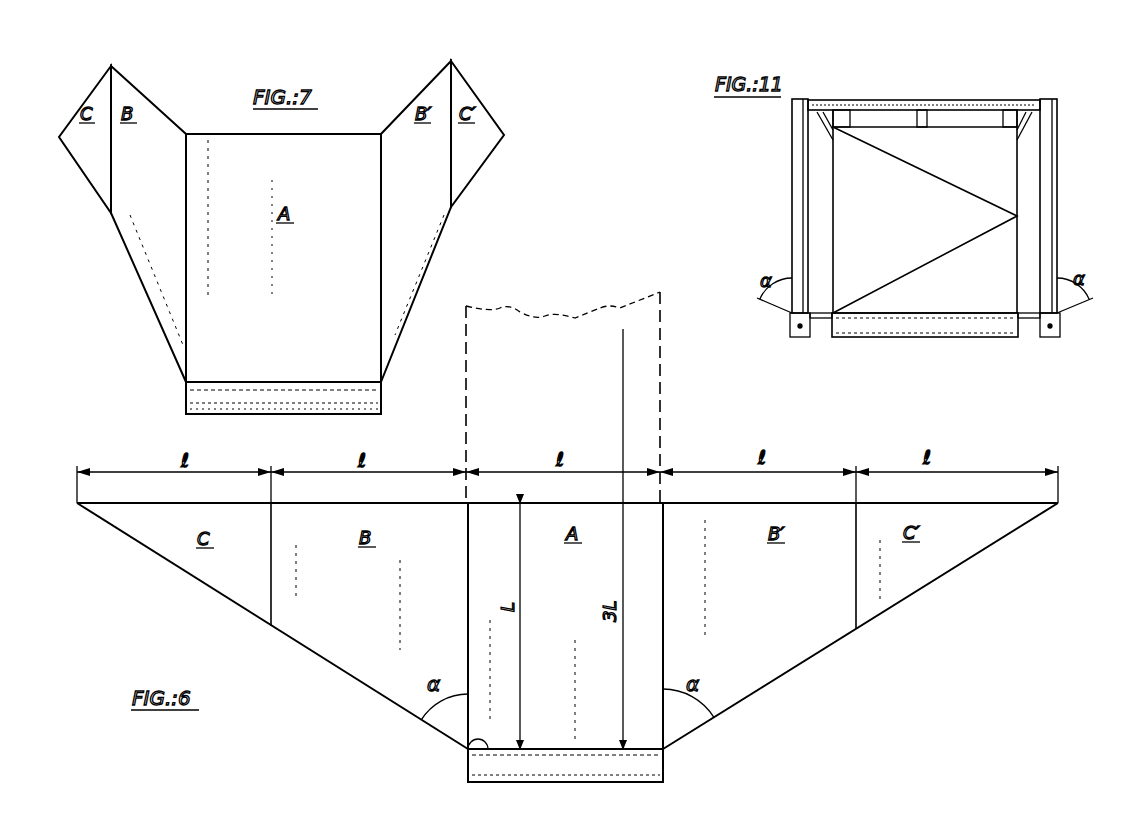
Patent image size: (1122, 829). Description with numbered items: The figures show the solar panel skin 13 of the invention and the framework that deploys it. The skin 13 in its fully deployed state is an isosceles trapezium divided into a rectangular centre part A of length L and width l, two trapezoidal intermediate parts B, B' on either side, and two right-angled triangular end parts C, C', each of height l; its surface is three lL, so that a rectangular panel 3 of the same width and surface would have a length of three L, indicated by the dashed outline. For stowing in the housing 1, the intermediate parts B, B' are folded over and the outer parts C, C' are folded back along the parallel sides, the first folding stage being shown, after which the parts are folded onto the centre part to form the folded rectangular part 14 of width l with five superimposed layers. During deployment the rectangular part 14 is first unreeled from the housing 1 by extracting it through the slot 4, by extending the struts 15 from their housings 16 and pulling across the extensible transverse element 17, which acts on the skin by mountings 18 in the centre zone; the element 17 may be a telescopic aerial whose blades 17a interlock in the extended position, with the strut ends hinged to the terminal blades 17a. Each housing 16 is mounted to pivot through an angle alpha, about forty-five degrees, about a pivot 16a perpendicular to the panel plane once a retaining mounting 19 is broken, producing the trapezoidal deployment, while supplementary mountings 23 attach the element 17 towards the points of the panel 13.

In FIG. 7, the housing 1 is at (200, 395).
In FIG. 6, the housing 1 is at (645, 768).
In FIG. 11, the housing 1 is at (895, 328).
In FIG. 6, the rectangular panel 3 is at (643, 375).
In FIG. 6, the slot 4 is at (468, 749).
In FIG. 11, the slot 4 is at (967, 312).
In FIG. 6, the skin 13 is at (302, 650).
In FIG. 11, the folded rectangular part 14 is at (1020, 166).
In FIG. 11, the struts 15 is at (802, 176).
In FIG. 11, the housing for the struts 16 is at (793, 335).
In FIG. 11, the pivot 16a is at (803, 330).
In FIG. 11, the extensible transverse element 17 is at (970, 107).
In FIG. 11, the blades 17a is at (1030, 110).
In FIG. 11, the mountings 18 is at (850, 113).
In FIG. 11, the mounting 19 is at (818, 312).
In FIG. 11, the supplementary mountings 23 is at (818, 122).